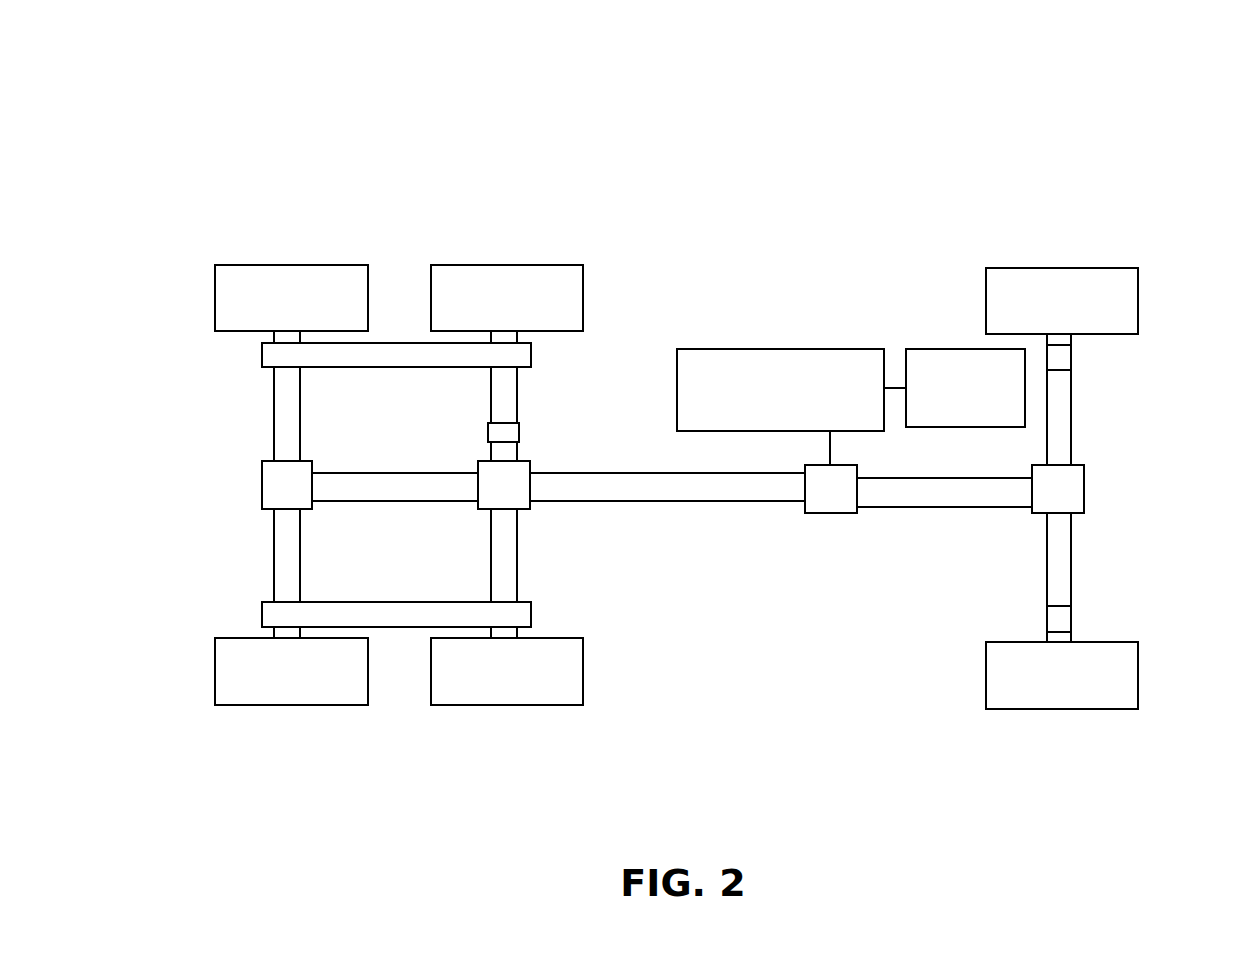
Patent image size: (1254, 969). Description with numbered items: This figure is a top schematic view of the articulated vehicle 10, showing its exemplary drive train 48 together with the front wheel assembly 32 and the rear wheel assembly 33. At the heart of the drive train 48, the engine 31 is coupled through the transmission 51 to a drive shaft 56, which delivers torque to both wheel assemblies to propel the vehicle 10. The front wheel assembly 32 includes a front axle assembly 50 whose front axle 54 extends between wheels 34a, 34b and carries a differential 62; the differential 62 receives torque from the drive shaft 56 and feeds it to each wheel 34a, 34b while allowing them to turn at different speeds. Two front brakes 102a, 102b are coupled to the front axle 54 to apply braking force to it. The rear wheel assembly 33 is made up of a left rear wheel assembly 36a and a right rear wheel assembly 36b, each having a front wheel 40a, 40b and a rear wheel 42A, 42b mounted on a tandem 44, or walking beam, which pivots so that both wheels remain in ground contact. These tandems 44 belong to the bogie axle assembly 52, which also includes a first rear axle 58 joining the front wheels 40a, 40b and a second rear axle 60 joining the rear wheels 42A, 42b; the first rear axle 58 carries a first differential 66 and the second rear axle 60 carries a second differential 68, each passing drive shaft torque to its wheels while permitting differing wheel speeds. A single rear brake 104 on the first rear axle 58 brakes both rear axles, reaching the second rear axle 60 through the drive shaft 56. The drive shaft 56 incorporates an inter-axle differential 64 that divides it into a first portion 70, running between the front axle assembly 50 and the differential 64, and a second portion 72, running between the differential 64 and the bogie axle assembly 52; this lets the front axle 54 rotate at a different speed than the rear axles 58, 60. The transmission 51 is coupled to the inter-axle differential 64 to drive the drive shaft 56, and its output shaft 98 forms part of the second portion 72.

The vehicle 10 is at (270, 79).
The rear wheel assembly 33 is at (217, 213).
The rear wheel 42A is at (306, 265).
The rear wheel 42b is at (352, 705).
The front wheel 40a is at (530, 265).
The front wheel 40b is at (515, 705).
The tandem 44 is at (402, 343).
The left rear wheel assembly 36a is at (618, 328).
The right rear wheel assembly 36b is at (609, 667).
The bogie axle assembly 52 is at (194, 394).
The second differential 68 is at (262, 467).
The first differential 66 is at (482, 461).
The rear brake 104 is at (519, 433).
The second rear axle 60 is at (302, 557).
The first rear axle 58 is at (517, 570).
The drive shaft 56 is at (423, 501).
The output shaft 98 is at (670, 473).
The second portion 72 is at (672, 525).
The drive train 48 is at (731, 233).
The transmission 51 is at (812, 348).
The engine 31 is at (918, 348).
The inter-axle differential 64 is at (838, 513).
The first portion 70 is at (945, 522).
The differential 62 is at (1084, 493).
The front axle 54 is at (1071, 568).
The front brake 102a is at (1072, 360).
The front brake 102b is at (1071, 615).
The wheel 34a is at (1013, 268).
The wheel 34b is at (1130, 709).
The front wheel assembly 32 is at (1171, 269).
The front axle assembly 50 is at (1131, 390).